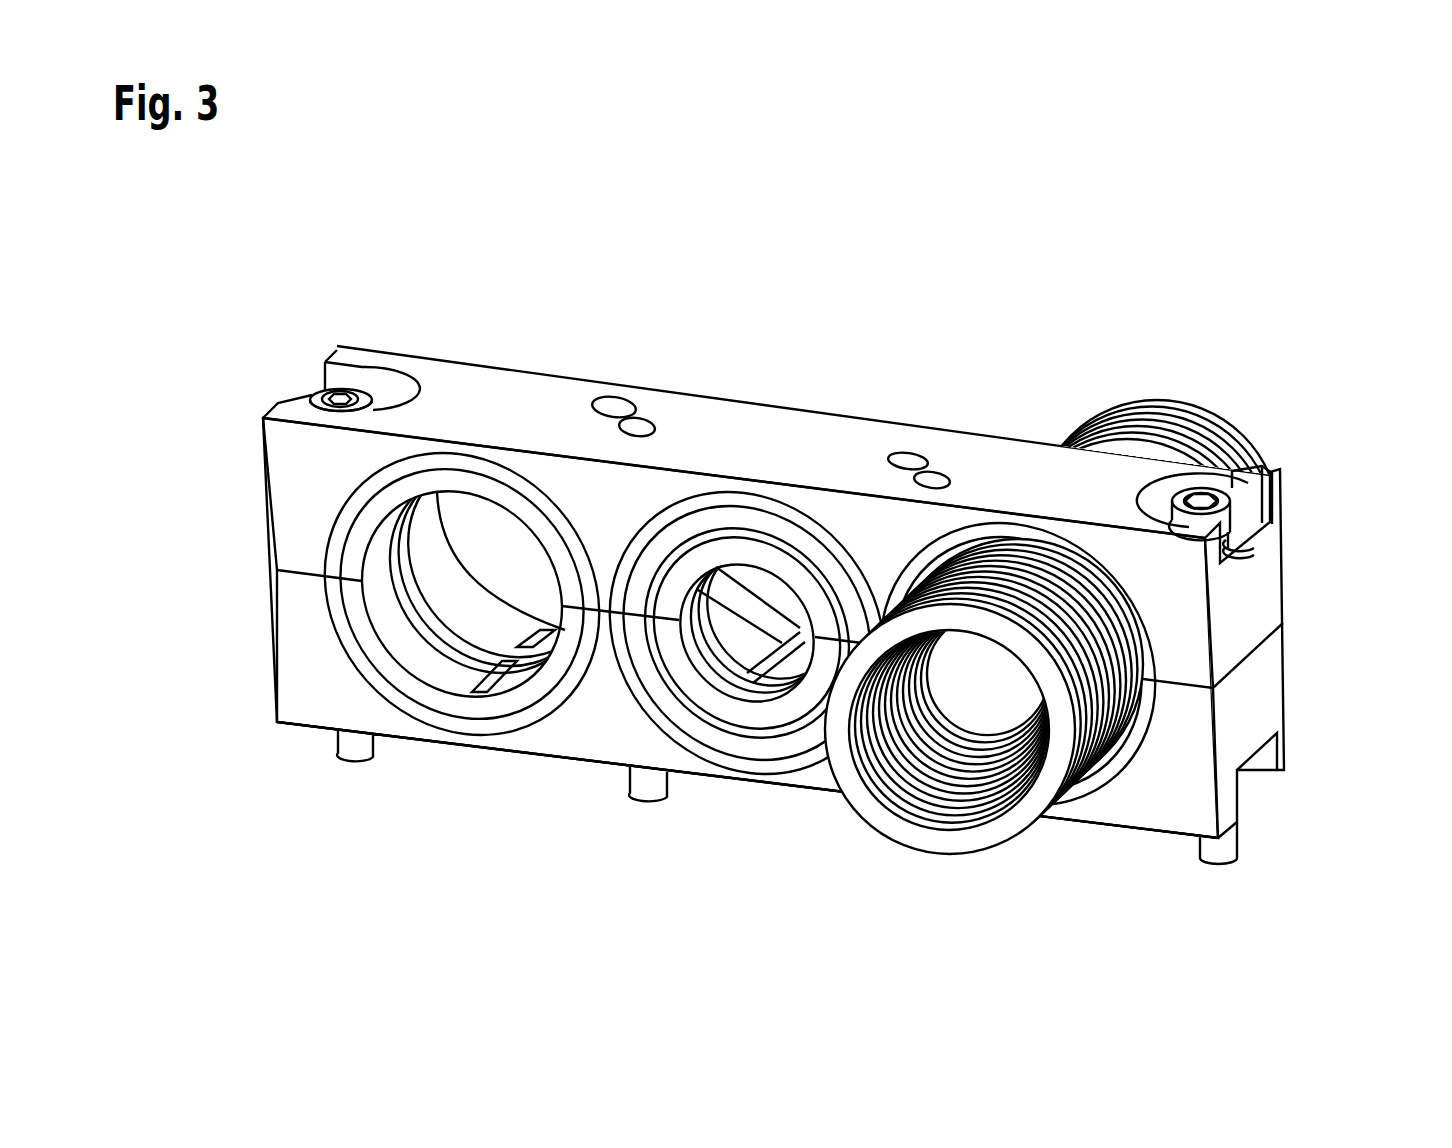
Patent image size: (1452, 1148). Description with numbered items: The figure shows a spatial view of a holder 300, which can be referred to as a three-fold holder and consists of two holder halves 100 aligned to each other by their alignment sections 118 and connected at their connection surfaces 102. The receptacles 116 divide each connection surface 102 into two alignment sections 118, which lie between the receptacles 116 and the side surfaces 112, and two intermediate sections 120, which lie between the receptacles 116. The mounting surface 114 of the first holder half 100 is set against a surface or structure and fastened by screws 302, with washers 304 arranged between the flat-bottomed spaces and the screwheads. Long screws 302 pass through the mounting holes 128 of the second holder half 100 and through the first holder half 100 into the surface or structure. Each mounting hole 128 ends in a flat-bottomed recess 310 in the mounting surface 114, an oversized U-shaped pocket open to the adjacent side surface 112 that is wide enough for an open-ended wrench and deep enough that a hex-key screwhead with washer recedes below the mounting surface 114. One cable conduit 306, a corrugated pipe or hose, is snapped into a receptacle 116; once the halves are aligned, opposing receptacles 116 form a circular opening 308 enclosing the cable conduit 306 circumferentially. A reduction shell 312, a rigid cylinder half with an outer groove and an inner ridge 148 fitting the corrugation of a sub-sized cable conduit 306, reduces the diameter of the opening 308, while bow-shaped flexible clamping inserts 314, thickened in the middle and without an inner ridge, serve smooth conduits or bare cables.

The holder half 100 is at (1020, 458).
The connection surface 102 is at (772, 574).
The side surface 112 is at (272, 656).
The mounting surface 114 is at (862, 432).
The receptacle 116 is at (533, 708).
The alignment section 118 is at (280, 570).
The intermediate section 120 is at (623, 545).
The mounting hole 128 is at (322, 378).
The ridge 148 is at (482, 645).
The holder 300 is at (1357, 351).
The screw 302 is at (318, 398).
The washer 304 is at (1241, 553).
The cable conduit 306 is at (1146, 418).
The circular opening 308 is at (487, 545).
The flat-bottomed recess 310 is at (358, 378).
The reduction shell 312 is at (422, 487).
The clamping insert 314 is at (757, 555).